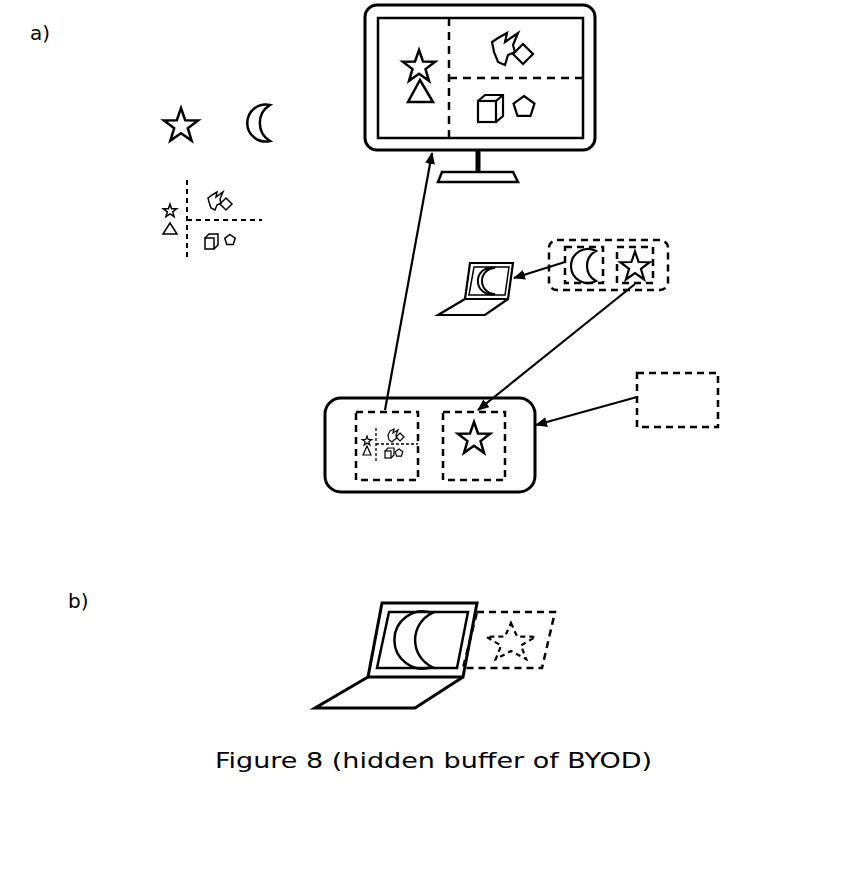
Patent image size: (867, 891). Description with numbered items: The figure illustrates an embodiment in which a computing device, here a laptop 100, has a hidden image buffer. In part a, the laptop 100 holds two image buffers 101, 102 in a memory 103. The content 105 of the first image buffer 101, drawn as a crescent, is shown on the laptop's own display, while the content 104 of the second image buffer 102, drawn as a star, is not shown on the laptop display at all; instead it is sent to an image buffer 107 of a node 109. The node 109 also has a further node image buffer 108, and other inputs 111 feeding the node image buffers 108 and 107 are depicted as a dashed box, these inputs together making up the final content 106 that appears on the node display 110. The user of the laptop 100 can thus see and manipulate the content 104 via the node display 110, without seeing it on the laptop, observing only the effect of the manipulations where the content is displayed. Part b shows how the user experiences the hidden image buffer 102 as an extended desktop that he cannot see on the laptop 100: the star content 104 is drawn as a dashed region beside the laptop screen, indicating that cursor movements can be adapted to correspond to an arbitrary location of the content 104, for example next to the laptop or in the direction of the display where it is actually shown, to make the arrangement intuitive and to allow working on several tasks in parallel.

The computing device 100 is at (482, 262).
The image buffer 101 is at (577, 247).
The image buffer 102 is at (635, 247).
The memory 103 is at (668, 276).
The content 104 is at (183, 115).
The content 105 is at (258, 112).
The final content 106 is at (224, 181).
The image buffer 107 is at (505, 436).
The node image buffer 108 is at (356, 440).
The node 109 is at (408, 492).
The node display 110 is at (595, 33).
The other inputs 111 is at (718, 397).